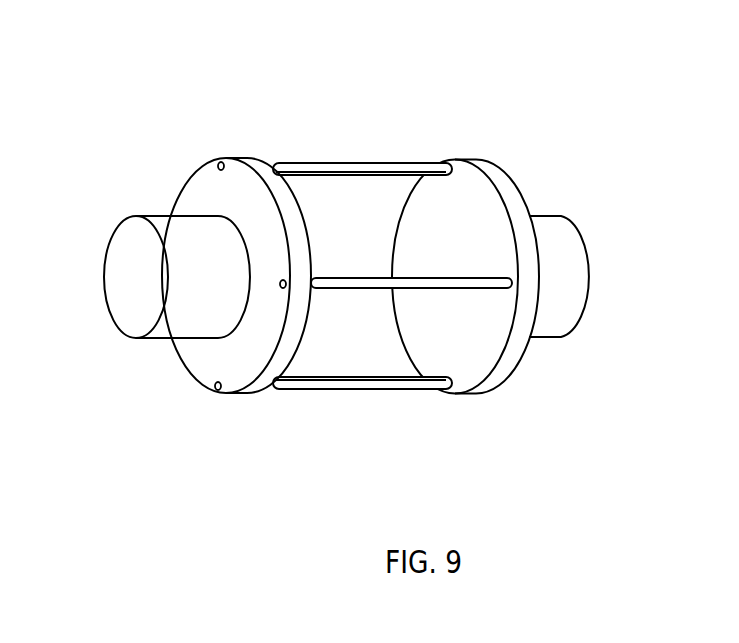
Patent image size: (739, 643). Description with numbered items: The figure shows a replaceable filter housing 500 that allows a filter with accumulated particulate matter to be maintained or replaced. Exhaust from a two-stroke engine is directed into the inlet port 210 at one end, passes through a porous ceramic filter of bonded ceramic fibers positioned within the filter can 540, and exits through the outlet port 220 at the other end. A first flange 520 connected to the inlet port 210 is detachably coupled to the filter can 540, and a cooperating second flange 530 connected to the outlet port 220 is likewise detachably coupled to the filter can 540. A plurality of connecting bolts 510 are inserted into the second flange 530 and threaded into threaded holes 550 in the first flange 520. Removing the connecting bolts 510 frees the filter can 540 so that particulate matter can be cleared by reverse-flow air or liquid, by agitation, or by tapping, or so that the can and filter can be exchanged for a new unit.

The replaceable filter housing 500 is at (564, 61).
The inlet port 210 is at (147, 217).
The outlet port 220 is at (553, 338).
The connecting bolts 510 is at (292, 165).
The first flange 520 is at (254, 394).
The second flange 530 is at (513, 212).
The filter can 540 is at (402, 195).
The threaded holes 550 is at (221, 163).